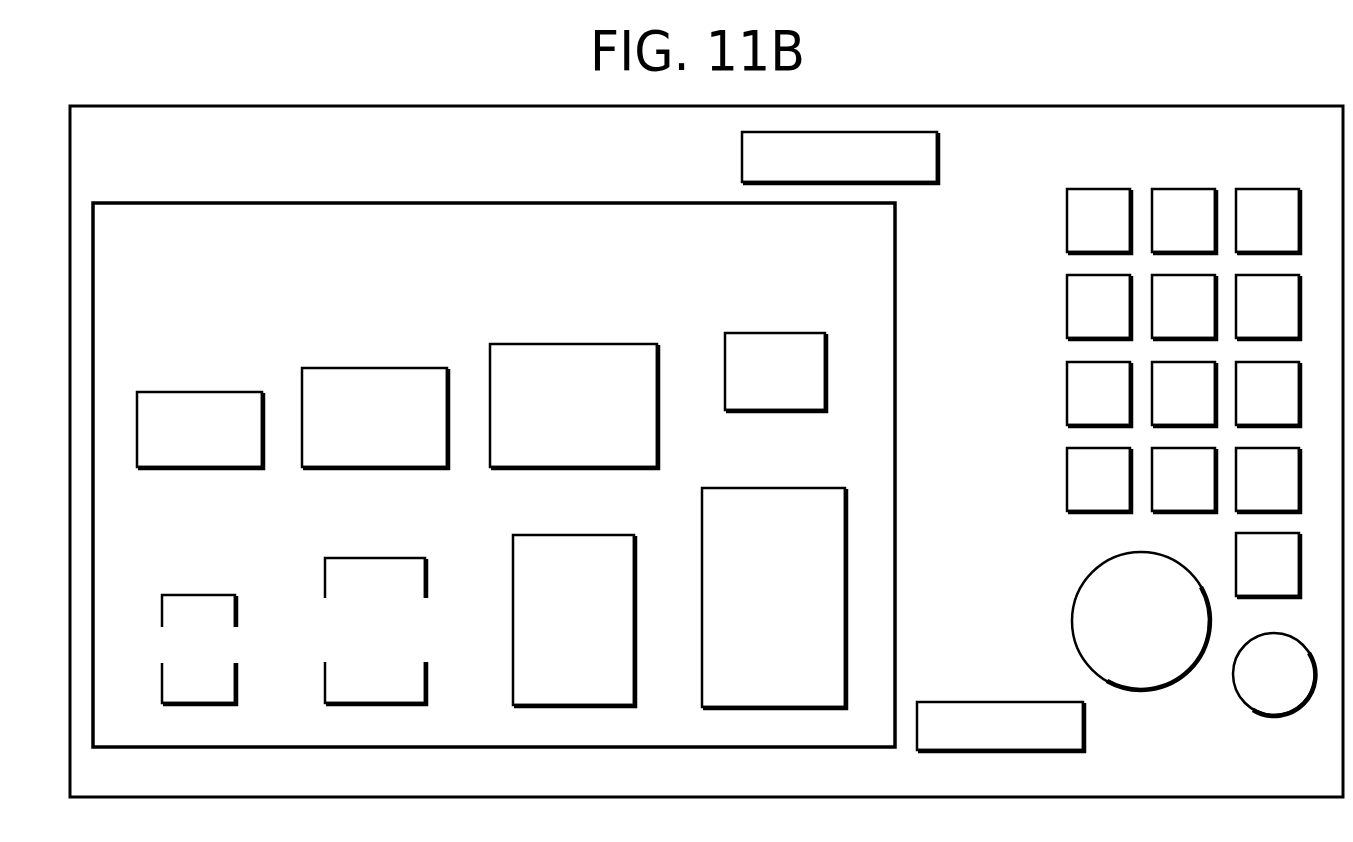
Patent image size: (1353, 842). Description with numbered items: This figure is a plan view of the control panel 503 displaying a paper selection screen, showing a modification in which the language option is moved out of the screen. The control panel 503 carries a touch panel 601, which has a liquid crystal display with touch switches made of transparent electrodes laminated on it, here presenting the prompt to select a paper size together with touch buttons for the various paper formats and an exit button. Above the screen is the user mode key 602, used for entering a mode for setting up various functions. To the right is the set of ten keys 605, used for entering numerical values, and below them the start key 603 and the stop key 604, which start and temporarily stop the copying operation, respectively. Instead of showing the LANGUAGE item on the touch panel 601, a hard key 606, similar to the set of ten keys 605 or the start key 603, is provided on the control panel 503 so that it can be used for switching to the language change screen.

The control panel 503 is at (200, 167).
The touch panel 601 is at (327, 203).
The user mode key 602 is at (742, 158).
The start key 603 is at (1133, 690).
The stop key 604 is at (1237, 695).
The set of ten keys 605 is at (1176, 170).
The hard key 606 is at (990, 702).